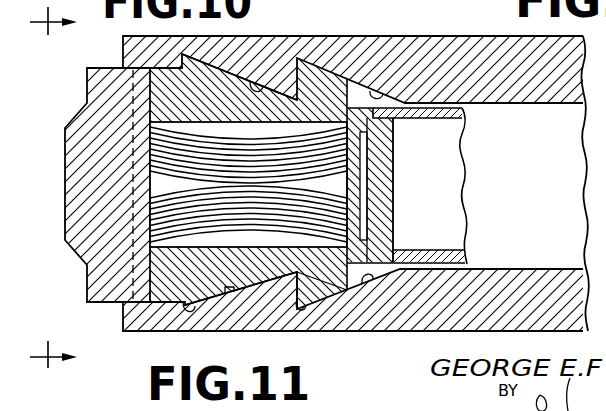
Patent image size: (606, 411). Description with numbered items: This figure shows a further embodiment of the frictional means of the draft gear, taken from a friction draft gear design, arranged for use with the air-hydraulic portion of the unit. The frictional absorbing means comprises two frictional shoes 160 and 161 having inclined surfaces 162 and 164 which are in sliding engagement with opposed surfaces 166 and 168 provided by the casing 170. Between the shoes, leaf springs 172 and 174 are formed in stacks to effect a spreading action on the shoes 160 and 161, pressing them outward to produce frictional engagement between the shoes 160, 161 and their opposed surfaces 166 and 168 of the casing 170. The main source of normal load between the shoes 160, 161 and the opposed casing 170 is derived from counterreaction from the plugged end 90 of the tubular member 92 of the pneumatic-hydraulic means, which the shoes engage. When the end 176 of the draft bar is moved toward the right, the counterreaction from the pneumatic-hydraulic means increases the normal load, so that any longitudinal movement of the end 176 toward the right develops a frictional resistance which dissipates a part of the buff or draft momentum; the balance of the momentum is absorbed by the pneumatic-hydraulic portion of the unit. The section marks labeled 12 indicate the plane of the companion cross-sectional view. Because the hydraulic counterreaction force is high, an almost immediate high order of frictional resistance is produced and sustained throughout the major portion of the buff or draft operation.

The section line 12 is at (57, 194).
The plugged end 90 is at (383, 163).
The tubular member 92 is at (463, 122).
The frictional shoe 160 is at (325, 82).
The frictional shoe 161 is at (325, 290).
The inclined surface 162 is at (238, 72).
The inclined surface 164 is at (313, 283).
The casing surface 166 is at (262, 88).
The casing surface 168 is at (386, 90).
The casing 170 is at (462, 55).
The leaf springs 172 is at (217, 157).
The leaf springs 174 is at (218, 213).
The end of the draft bar 176 is at (85, 171).